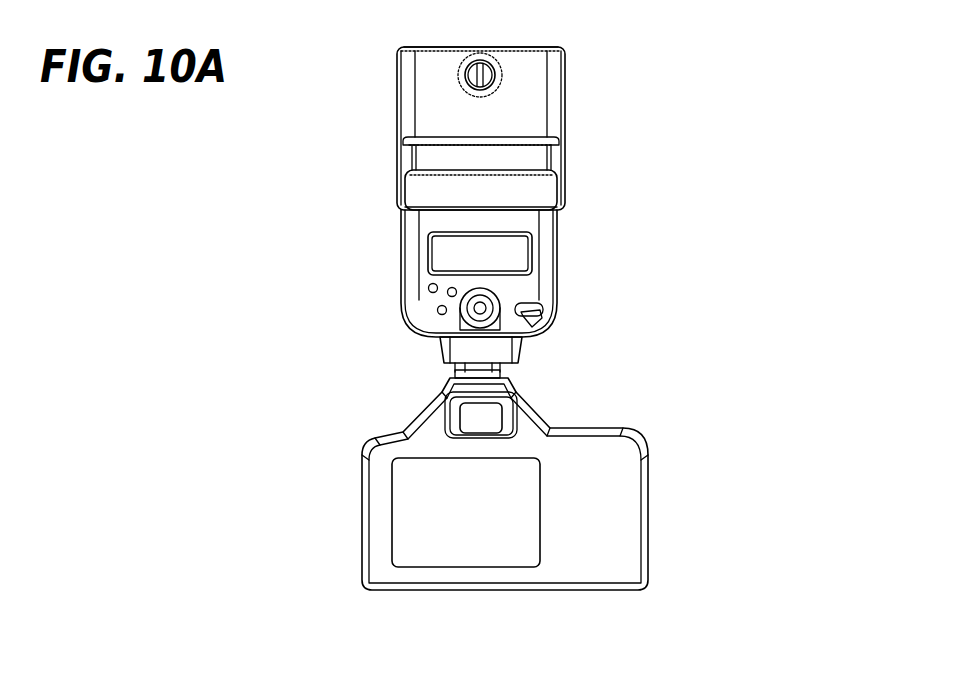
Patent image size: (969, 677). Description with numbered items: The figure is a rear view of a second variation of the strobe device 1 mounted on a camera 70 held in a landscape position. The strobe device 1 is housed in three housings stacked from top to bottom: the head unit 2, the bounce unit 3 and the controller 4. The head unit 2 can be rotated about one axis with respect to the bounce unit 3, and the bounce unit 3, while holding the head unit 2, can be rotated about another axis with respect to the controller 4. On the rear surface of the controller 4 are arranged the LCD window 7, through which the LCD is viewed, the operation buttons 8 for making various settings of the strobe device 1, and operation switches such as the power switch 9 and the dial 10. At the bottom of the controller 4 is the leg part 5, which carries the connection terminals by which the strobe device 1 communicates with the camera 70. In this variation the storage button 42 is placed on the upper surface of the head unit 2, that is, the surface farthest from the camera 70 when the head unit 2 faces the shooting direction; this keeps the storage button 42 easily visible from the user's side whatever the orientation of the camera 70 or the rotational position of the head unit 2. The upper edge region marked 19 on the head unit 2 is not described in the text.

The strobe device 1 is at (383, 330).
The head unit 2 is at (410, 93).
The bounce unit 3 is at (413, 196).
The controller 4 is at (532, 283).
The leg part 5 is at (497, 372).
The LCD window 7 is at (440, 258).
The operation buttons 8 is at (430, 300).
The power switch 9 is at (537, 315).
The dial 10 is at (466, 318).
The head top edge 19 is at (440, 47).
The storage button 42 is at (487, 62).
The camera 70 is at (577, 448).